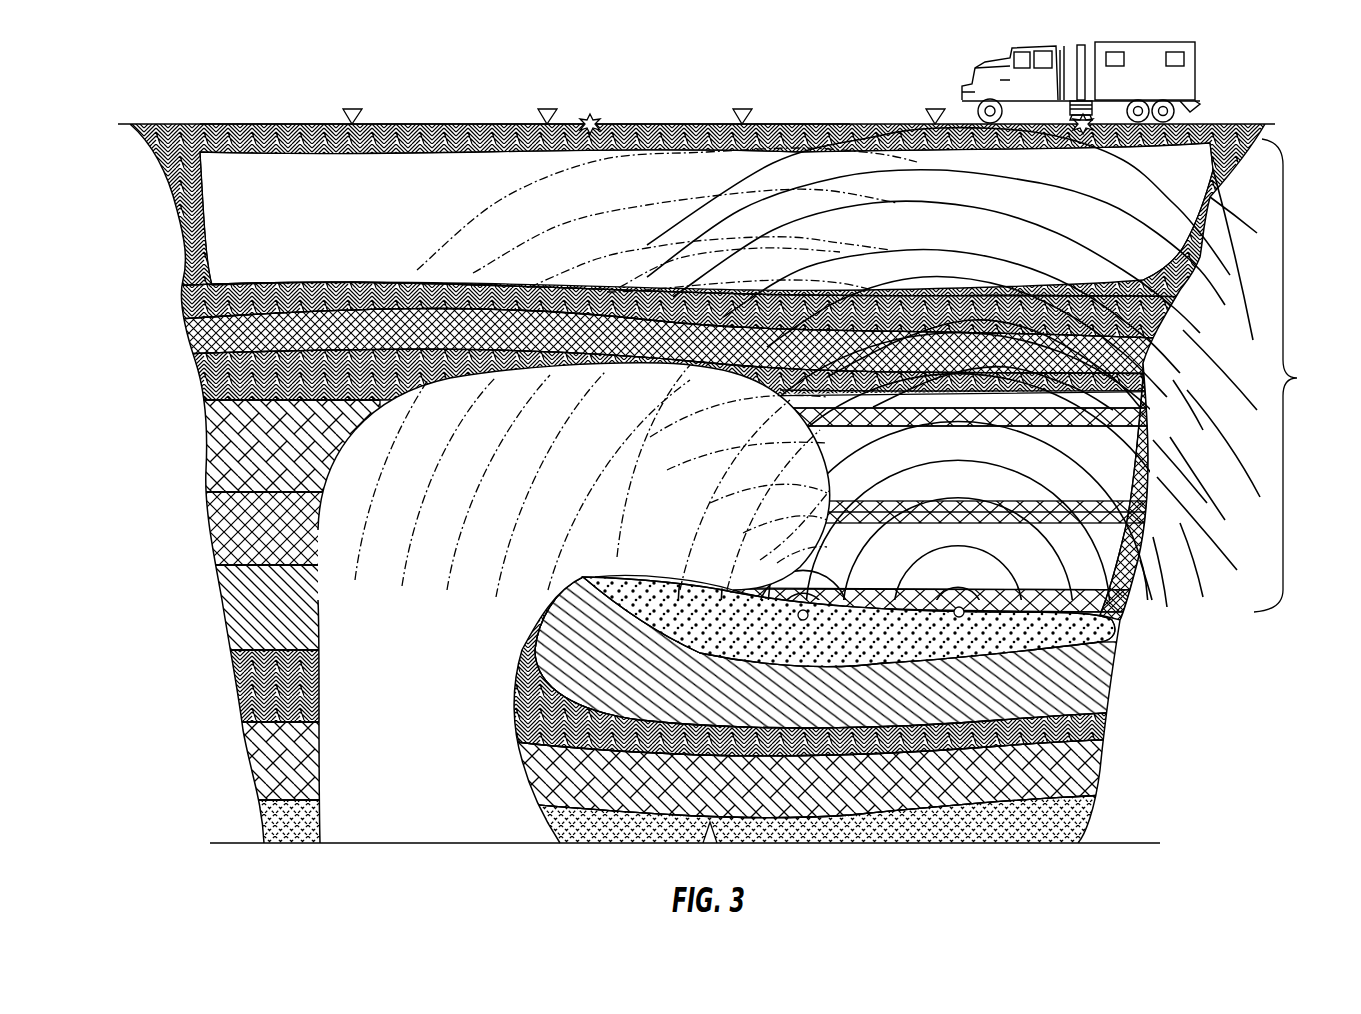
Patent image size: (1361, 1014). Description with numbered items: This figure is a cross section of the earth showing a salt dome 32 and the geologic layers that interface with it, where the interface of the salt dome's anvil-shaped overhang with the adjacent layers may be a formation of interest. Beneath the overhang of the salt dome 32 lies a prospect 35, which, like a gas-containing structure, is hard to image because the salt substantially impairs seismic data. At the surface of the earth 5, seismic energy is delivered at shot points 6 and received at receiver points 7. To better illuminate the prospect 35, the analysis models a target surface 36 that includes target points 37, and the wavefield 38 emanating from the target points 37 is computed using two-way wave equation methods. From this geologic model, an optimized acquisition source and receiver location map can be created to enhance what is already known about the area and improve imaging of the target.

The surface of the earth 5 is at (820, 123).
The shot points 6 is at (593, 113).
The receiver points 7 is at (935, 108).
The salt dome 32 is at (428, 666).
The prospect 35 is at (657, 600).
The target surface 36 is at (1118, 640).
The target points 37 is at (803, 620).
The wavefield 38 is at (1292, 375).